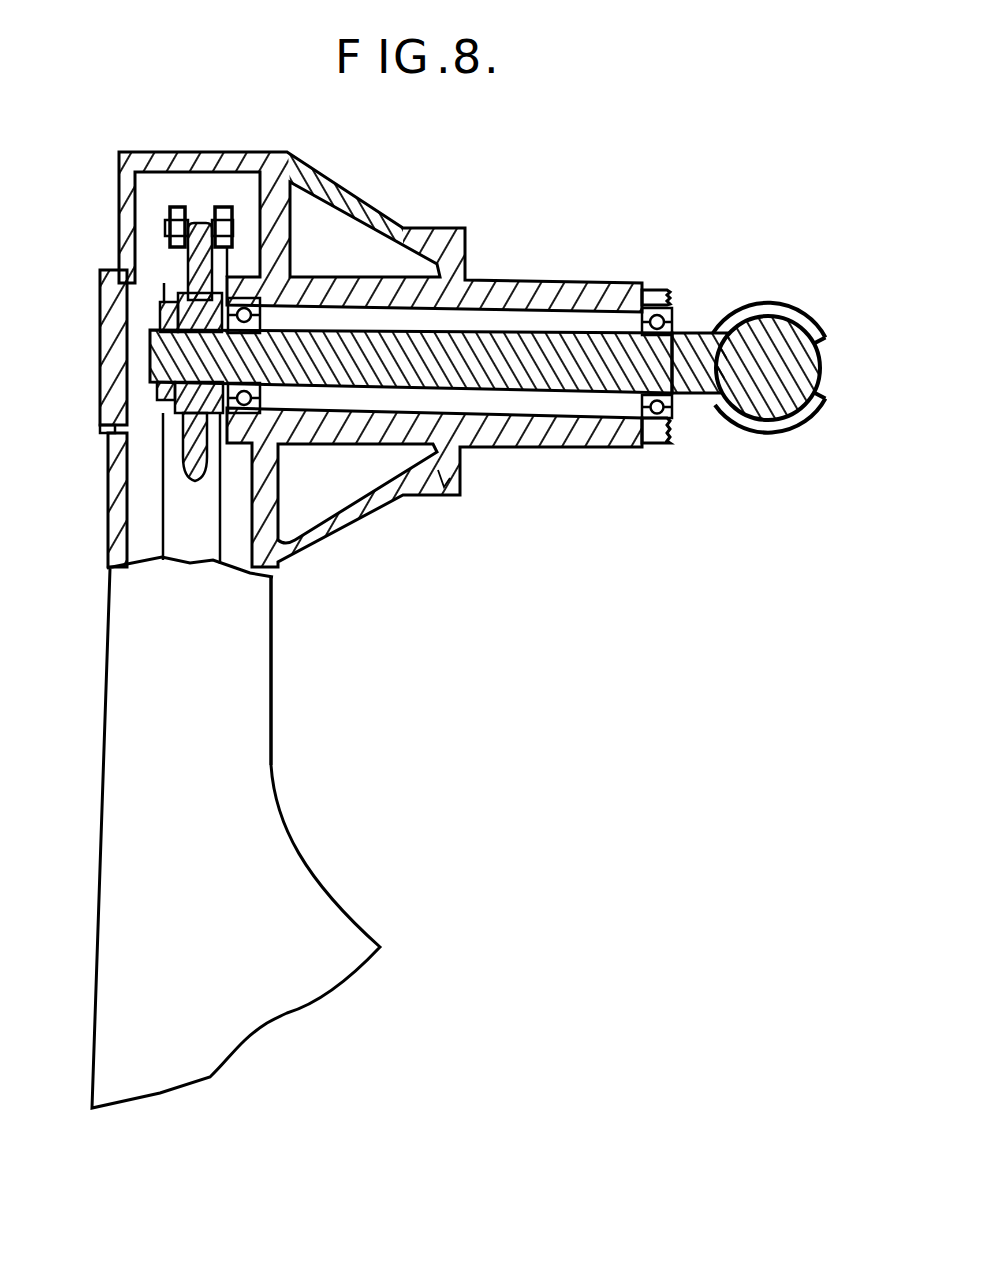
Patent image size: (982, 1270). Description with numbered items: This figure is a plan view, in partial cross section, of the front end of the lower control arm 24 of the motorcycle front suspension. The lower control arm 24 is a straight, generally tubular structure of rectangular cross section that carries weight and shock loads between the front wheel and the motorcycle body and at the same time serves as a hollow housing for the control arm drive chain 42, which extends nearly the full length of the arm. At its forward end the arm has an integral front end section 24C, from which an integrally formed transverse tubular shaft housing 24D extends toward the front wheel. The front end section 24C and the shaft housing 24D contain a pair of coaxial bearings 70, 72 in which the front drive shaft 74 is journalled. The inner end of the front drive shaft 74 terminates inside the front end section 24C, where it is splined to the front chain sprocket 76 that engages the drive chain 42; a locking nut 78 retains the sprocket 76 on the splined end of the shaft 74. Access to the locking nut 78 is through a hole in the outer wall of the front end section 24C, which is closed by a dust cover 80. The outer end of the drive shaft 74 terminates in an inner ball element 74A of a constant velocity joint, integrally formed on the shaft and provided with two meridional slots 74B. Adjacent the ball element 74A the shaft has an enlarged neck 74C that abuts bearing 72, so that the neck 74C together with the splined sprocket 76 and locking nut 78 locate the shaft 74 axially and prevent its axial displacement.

The lower control arm 24 is at (308, 784).
The front end section 24C is at (258, 632).
The transverse tubular shaft housing 24D is at (450, 495).
The control arm drive chain 42 is at (180, 213).
The bearing 70 is at (257, 293).
The bearing 72 is at (677, 311).
The front drive shaft 74 is at (470, 345).
The inner ball element 74A is at (832, 360).
The meridional slots 74B is at (772, 305).
The enlarged neck 74C is at (695, 392).
The front chain sprocket 76 is at (195, 265).
The locking nut 78 is at (165, 318).
The dust cover 80 is at (110, 397).